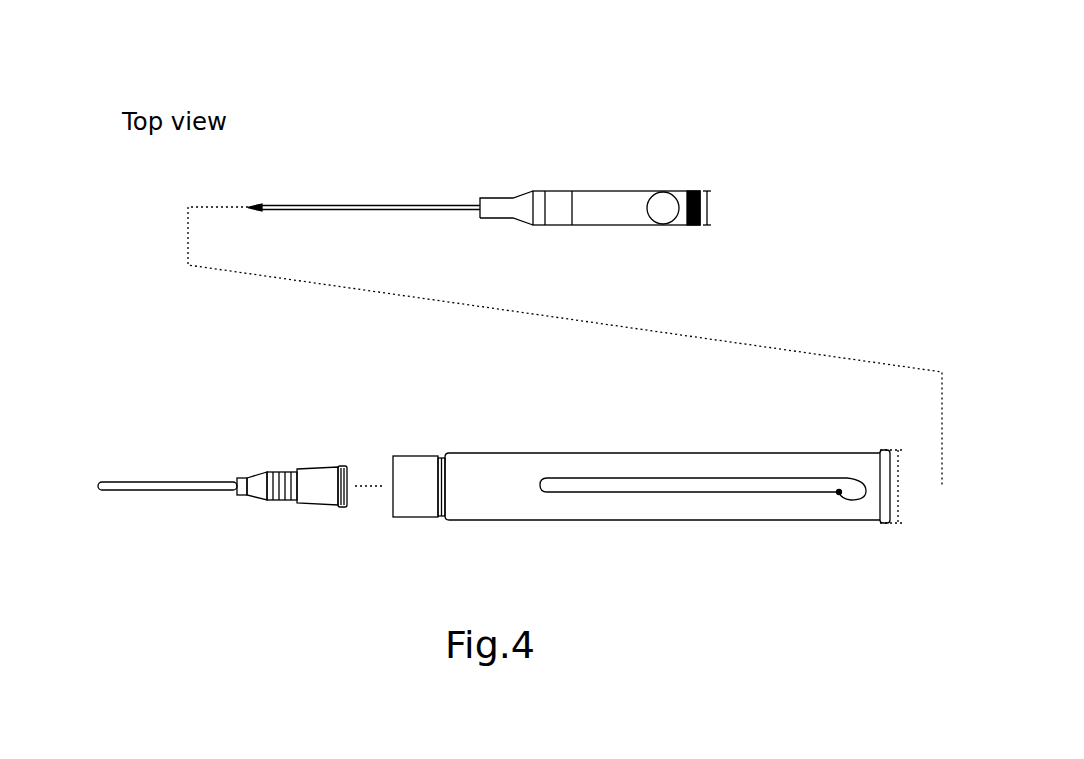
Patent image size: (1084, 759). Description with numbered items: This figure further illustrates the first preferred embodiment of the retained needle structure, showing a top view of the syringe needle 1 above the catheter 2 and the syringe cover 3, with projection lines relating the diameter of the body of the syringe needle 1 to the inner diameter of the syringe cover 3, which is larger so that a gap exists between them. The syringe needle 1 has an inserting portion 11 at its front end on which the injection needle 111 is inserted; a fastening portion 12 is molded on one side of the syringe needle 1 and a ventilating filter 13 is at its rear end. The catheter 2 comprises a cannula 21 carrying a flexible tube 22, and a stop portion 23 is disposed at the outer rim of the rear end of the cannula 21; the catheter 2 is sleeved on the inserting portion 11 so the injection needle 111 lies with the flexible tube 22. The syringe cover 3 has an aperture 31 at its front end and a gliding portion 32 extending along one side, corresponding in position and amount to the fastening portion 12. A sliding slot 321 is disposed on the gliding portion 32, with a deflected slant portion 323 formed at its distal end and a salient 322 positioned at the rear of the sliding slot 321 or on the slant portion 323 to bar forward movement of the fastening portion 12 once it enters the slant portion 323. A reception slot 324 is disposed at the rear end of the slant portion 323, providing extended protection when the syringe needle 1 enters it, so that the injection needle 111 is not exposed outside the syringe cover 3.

The syringe needle 1 is at (632, 168).
The inserting portion 11 is at (480, 197).
The injection needle 111 is at (352, 204).
The fastening portion 12 is at (667, 220).
The ventilating filter 13 is at (690, 190).
The catheter 2 is at (298, 453).
The cannula 21 is at (257, 476).
The flexible tube 22 is at (140, 482).
The stop portion 23 is at (348, 506).
The syringe cover 3 is at (452, 438).
The aperture 31 is at (392, 456).
The gliding portion 32 is at (550, 452).
The sliding slot 321 is at (628, 477).
The salient 322 is at (839, 492).
The slant portion 323 is at (850, 487).
The reception slot 324 is at (890, 519).